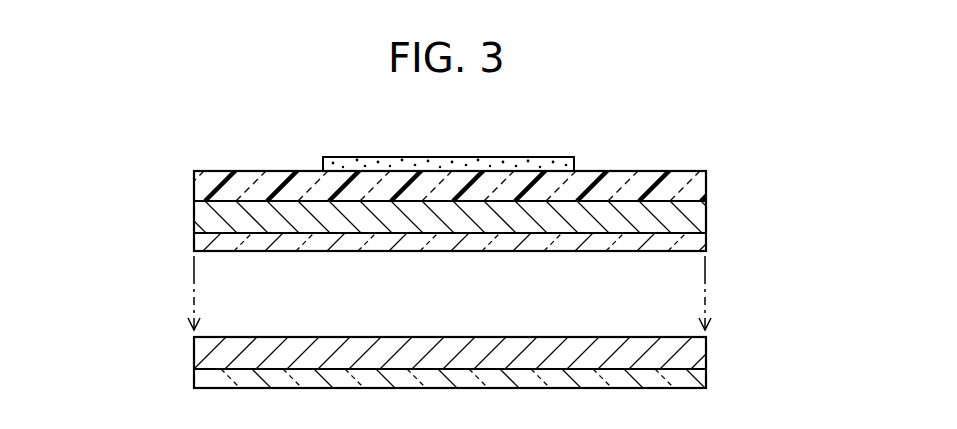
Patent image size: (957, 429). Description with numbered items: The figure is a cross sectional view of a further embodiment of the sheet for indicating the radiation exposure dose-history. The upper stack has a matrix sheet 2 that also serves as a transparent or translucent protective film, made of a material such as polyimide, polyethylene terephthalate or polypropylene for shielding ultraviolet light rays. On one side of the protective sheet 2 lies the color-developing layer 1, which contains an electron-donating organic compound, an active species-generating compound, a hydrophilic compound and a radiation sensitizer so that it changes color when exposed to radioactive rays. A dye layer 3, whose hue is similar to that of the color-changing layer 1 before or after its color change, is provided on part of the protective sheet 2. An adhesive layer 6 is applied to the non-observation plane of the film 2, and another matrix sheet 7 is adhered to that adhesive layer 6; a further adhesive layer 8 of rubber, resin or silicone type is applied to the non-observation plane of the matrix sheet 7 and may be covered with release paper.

The color-developing layer 1 is at (208, 215).
The matrix sheet 2 is at (208, 183).
The dye layer 3 is at (550, 160).
The adhesive layer 6 is at (682, 242).
The matrix sheet 7 is at (685, 352).
The adhesive layer 8 is at (682, 382).